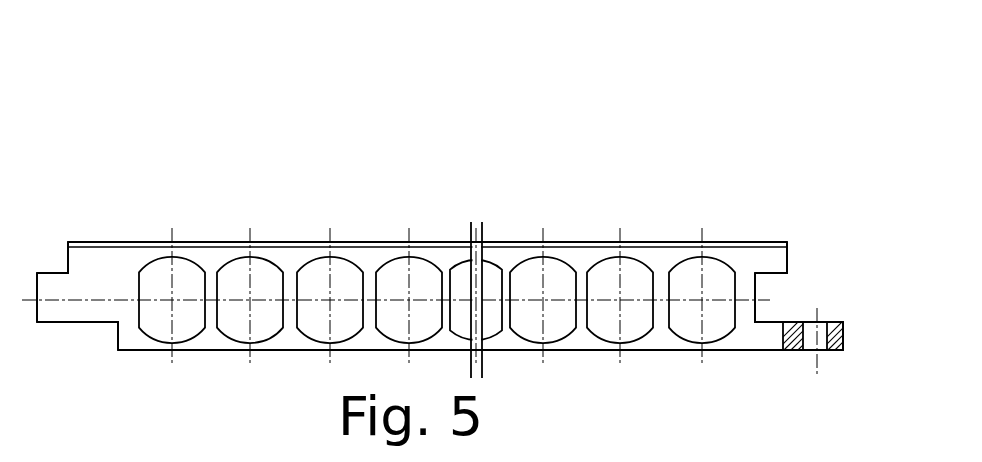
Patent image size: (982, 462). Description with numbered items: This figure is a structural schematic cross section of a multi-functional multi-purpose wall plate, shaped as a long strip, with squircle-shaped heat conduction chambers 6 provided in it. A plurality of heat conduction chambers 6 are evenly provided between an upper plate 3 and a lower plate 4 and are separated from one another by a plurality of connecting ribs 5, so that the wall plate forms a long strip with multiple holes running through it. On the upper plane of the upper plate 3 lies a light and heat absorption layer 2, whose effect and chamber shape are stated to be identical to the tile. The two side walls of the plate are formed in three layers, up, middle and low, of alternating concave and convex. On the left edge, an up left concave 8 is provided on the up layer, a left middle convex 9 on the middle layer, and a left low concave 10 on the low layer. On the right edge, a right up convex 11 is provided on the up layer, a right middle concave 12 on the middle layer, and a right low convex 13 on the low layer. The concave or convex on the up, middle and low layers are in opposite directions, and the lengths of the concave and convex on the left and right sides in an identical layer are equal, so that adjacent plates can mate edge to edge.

The light and heat absorption layer 2 is at (427, 140).
The upper plate 3 is at (383, 190).
The lower plate 4 is at (480, 193).
The connecting rib 5 is at (543, 188).
The heat conduction chamber 6 is at (621, 190).
The up left concave 8 is at (100, 155).
The left middle convex 9 is at (132, 179).
The left low concave 10 is at (162, 193).
The right up convex 11 is at (838, 155).
The right middle concave 12 is at (838, 224).
The right low convex 13 is at (845, 272).